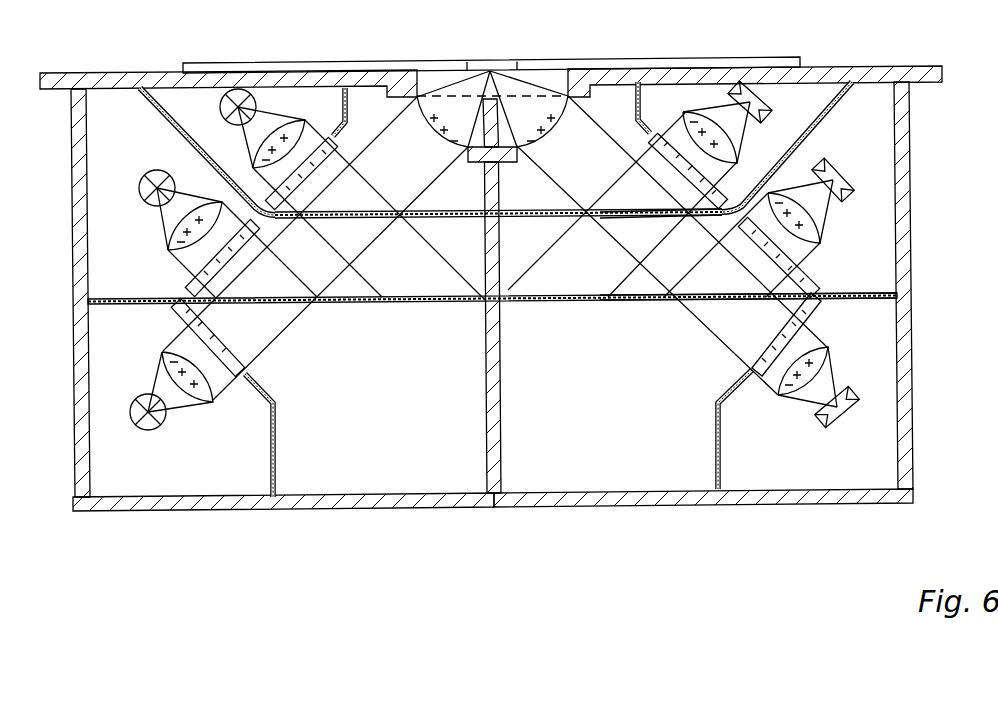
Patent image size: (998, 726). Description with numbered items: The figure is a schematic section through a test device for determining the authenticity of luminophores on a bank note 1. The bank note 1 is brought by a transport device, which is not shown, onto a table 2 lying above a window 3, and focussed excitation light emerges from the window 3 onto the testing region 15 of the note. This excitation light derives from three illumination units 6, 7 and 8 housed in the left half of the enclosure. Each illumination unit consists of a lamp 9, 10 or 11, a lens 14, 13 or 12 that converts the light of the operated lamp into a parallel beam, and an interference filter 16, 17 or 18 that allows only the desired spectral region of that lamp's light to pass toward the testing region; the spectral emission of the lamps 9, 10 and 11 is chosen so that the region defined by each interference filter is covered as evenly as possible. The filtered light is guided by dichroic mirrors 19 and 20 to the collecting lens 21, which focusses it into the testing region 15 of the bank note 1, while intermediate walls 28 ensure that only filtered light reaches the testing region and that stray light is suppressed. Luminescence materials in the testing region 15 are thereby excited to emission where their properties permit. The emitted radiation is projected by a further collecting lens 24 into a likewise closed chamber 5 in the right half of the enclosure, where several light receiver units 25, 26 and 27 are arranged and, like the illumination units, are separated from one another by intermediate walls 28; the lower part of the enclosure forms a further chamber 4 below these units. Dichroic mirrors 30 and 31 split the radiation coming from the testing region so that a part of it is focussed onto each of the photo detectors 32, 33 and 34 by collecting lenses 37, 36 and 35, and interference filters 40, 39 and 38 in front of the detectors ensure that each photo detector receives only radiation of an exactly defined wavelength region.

The bank note 1 is at (605, 64).
The table 2 is at (899, 73).
The window 3 is at (560, 78).
The lower left chamber 4 is at (378, 450).
The closed chamber 5 is at (603, 462).
The illumination unit 6 is at (148, 457).
The illumination unit 7 is at (125, 129).
The illumination unit 8 is at (201, 115).
The lamp 9 is at (140, 416).
The lamp 10 is at (157, 183).
The lamp 11 is at (242, 95).
The lens 12 is at (283, 137).
The lens 13 is at (193, 227).
The lens 14 is at (163, 367).
The testing region 15 is at (501, 65).
The interference filter 16 is at (187, 333).
The interference filter 17 is at (203, 260).
The interference filter 18 is at (318, 155).
The dichroic mirror 19 is at (343, 218).
The dichroic mirror 20 is at (285, 304).
The collecting lens 21 is at (431, 107).
The further collecting lens 24 is at (551, 117).
The light receiver unit 25 is at (857, 442).
The light receiver unit 26 is at (865, 117).
The light receiver unit 27 is at (796, 110).
The intermediate walls 28 is at (268, 477).
The dichroic mirror 30 is at (643, 215).
The dichroic mirror 31 is at (702, 298).
The photo detector 32 is at (840, 410).
The photo detector 33 is at (836, 178).
The photo detector 34 is at (754, 108).
The collecting lens 35 is at (711, 128).
The collecting lens 36 is at (805, 213).
The collecting lens 37 is at (822, 358).
The interference filter 38 is at (671, 140).
The interference filter 39 is at (800, 256).
The interference filter 40 is at (803, 328).